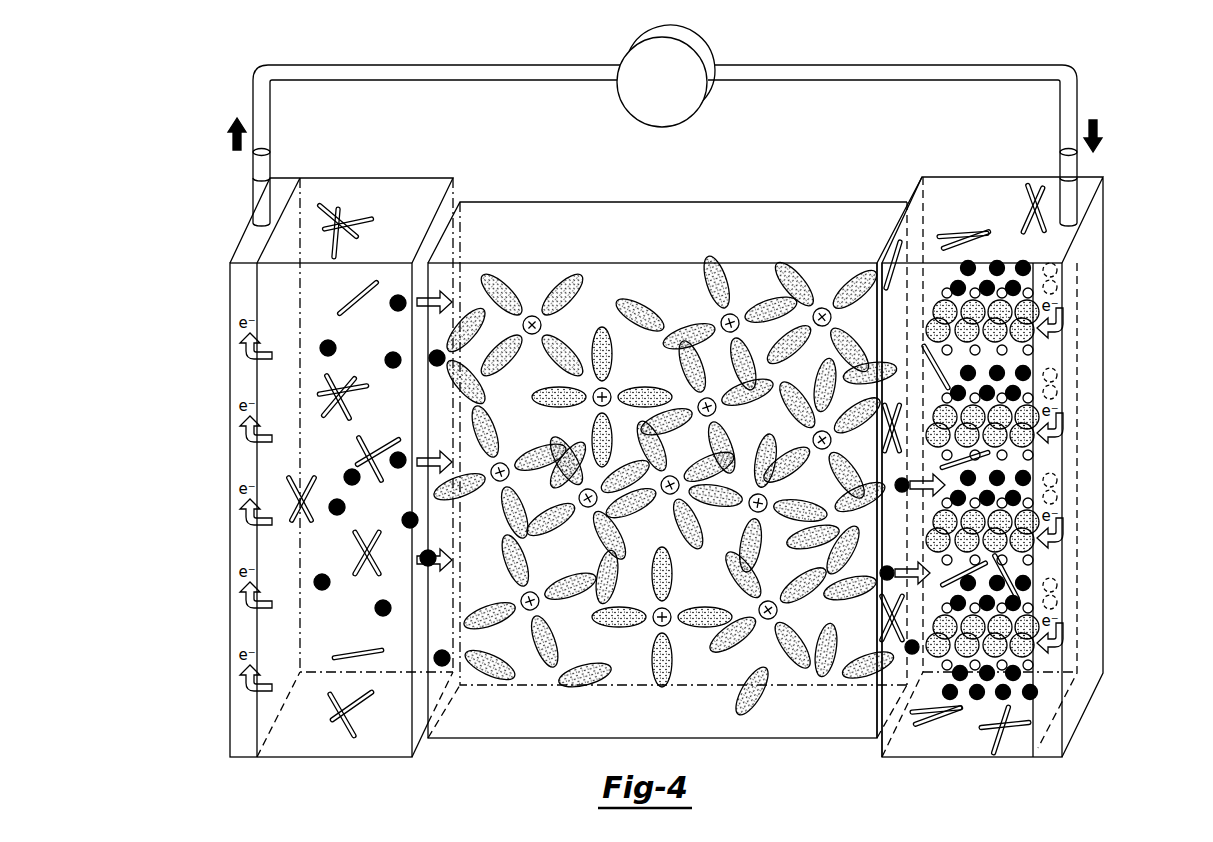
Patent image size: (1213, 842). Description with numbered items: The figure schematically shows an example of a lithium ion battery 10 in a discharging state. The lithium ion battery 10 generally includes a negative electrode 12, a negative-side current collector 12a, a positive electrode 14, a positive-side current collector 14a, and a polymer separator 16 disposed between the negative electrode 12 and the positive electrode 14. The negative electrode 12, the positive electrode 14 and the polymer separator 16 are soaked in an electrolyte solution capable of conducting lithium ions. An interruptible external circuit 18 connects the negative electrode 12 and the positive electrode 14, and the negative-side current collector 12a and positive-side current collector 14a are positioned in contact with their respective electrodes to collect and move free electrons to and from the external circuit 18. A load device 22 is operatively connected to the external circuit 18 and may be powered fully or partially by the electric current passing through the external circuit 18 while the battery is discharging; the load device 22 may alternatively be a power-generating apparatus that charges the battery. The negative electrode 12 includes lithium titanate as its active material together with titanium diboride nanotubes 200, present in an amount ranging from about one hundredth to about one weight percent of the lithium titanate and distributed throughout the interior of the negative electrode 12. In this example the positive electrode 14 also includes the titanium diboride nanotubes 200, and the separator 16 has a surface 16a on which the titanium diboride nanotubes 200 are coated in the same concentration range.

The lithium ion battery 10 is at (1104, 78).
The negative electrode 12 is at (397, 165).
The negative-side current collector 12a is at (246, 729).
The positive electrode 14 is at (988, 167).
The positive-side current collector 14a is at (1048, 741).
The polymer separator 16 is at (684, 226).
The separator surface 16a is at (897, 247).
The external circuit 18 is at (505, 65).
The load device 22 is at (710, 42).
The titanium diboride nanotubes 200 is at (352, 298).